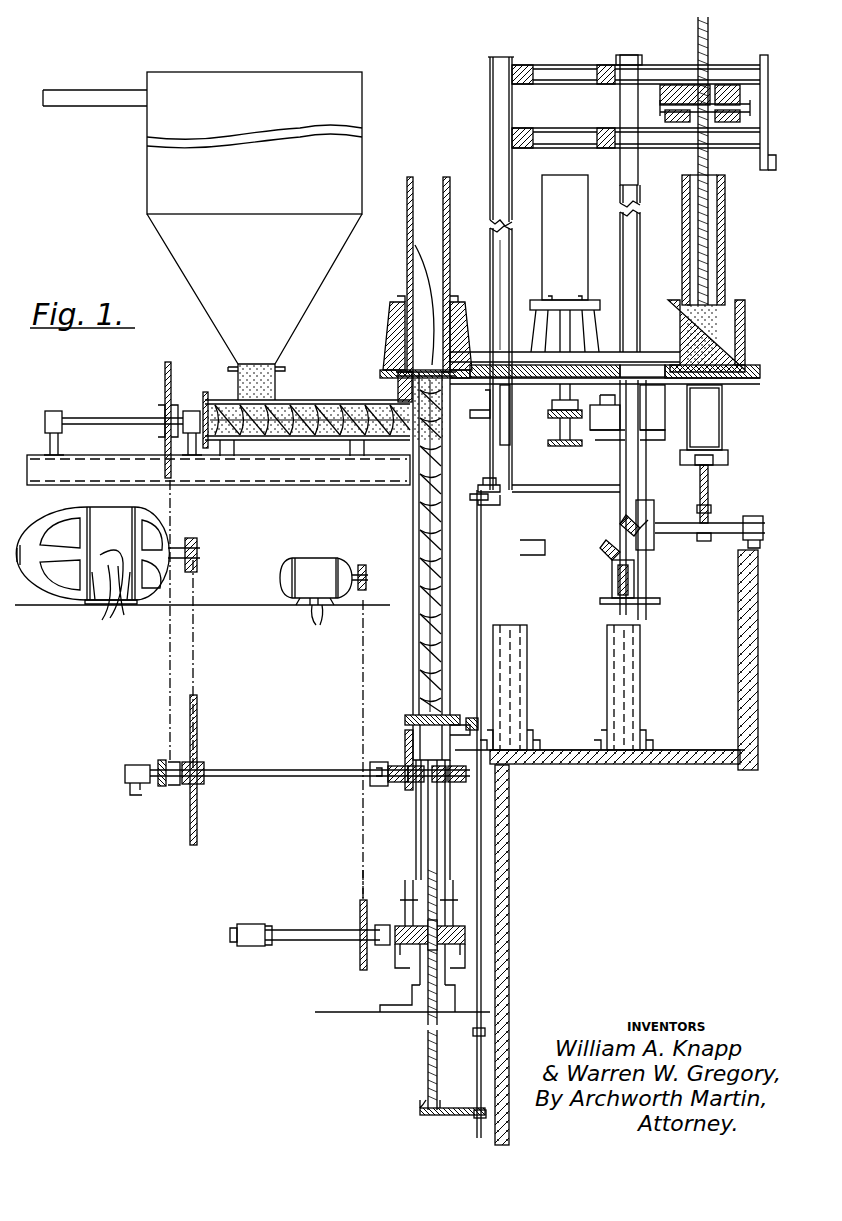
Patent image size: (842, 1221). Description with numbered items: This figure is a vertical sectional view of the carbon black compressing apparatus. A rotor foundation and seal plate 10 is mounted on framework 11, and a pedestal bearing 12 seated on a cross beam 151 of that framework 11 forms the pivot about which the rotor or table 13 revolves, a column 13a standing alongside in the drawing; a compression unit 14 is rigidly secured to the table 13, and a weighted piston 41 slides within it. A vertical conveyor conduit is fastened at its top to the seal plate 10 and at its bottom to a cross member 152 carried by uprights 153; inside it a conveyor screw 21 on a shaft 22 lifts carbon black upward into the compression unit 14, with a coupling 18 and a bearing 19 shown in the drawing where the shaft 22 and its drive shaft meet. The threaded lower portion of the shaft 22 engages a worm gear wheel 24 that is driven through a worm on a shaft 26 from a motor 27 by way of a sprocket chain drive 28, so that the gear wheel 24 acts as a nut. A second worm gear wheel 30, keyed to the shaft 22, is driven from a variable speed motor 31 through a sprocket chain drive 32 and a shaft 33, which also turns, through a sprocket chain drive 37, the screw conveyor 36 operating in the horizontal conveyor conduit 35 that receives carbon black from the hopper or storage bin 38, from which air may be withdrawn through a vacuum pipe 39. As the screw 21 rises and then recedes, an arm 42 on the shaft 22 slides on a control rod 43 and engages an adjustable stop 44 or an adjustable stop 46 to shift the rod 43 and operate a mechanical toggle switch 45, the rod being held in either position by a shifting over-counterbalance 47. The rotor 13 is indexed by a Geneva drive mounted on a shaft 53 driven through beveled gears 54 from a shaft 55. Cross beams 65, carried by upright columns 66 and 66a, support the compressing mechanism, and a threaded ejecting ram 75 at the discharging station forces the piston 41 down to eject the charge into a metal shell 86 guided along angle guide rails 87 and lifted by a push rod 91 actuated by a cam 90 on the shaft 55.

The rotor foundation and seal plate 10 is at (398, 385).
The framework 11 is at (478, 412).
The pedestal bearing 12 is at (558, 395).
The rotor or table 13 is at (475, 362).
The column 13a is at (490, 280).
The compression unit 14 is at (407, 205).
The coupling 18 is at (462, 724).
The bearing 19 is at (398, 785).
The conveyor screw 21 is at (442, 620).
The shaft 22 is at (413, 620).
The worm gear wheel 24 is at (456, 932).
The shaft 26 is at (320, 940).
The motor 27 is at (315, 585).
The sprocket chain drive 28 is at (362, 686).
The worm gear wheel 30 is at (468, 785).
The variable speed motor 31 is at (120, 525).
The sprocket chain drive 32 is at (197, 684).
The shaft 33 is at (250, 778).
The horizontal conveyor conduit 35 is at (306, 403).
The screw conveyor 36 is at (336, 402).
The sprocket chain drive 37 is at (165, 696).
The hopper or storage bin 38 is at (182, 258).
The vacuum pipe 39 is at (116, 106).
The piston 41 is at (410, 243).
The arm 42 is at (452, 1106).
The control rod 43 is at (477, 990).
The adjustable stop 44 is at (473, 1034).
The mechanical toggle switch 45 is at (487, 480).
The adjustable stop 46 is at (476, 1120).
The shifting over-counterbalance 47 is at (472, 490).
The shaft 53 is at (650, 582).
The beveled gears 54 is at (606, 548).
The shaft 55 is at (690, 530).
The cross beam 65 is at (625, 125).
The upright column 66 is at (610, 655).
The upright column 66a is at (490, 94).
The threaded ejecting ram 75 is at (708, 42).
The metal shell 86 is at (723, 420).
The angle guide rail 87 is at (728, 460).
The cam 90 is at (708, 520).
The push rod 91 is at (708, 494).
The cross beam 151 is at (562, 430).
The cross member 152 is at (450, 715).
The upright 153 is at (408, 740).